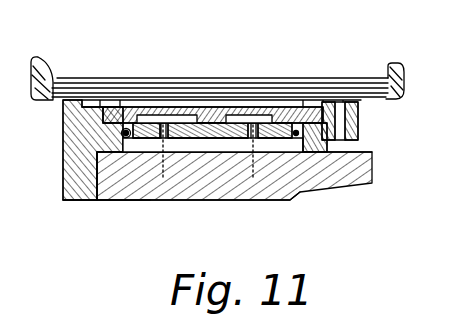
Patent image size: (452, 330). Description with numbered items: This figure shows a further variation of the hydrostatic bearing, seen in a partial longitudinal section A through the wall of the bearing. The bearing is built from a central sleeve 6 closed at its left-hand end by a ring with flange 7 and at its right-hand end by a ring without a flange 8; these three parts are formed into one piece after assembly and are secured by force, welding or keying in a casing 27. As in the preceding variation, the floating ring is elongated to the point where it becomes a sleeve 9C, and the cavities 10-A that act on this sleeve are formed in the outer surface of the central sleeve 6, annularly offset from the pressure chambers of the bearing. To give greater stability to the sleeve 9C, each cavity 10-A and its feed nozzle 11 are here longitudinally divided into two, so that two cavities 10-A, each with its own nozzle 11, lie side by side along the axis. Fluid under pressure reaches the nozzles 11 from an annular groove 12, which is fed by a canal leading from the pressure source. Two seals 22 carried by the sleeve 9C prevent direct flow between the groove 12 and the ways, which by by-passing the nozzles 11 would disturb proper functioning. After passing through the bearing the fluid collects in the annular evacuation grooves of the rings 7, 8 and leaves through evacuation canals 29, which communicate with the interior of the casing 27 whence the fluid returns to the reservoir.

The belt / strap A is at (374, 68).
The central sleeve 6 is at (121, 114).
The ring with flange 7 is at (66, 100).
The ring without a flange 8 is at (350, 108).
The sleeve 9C is at (200, 142).
The cavities 10-A is at (152, 118).
The nozzle 11 is at (182, 116).
The annular groove 12 is at (232, 152).
The seals 22 is at (127, 140).
The casing 27 is at (113, 193).
The evacuation canals 29 is at (361, 126).